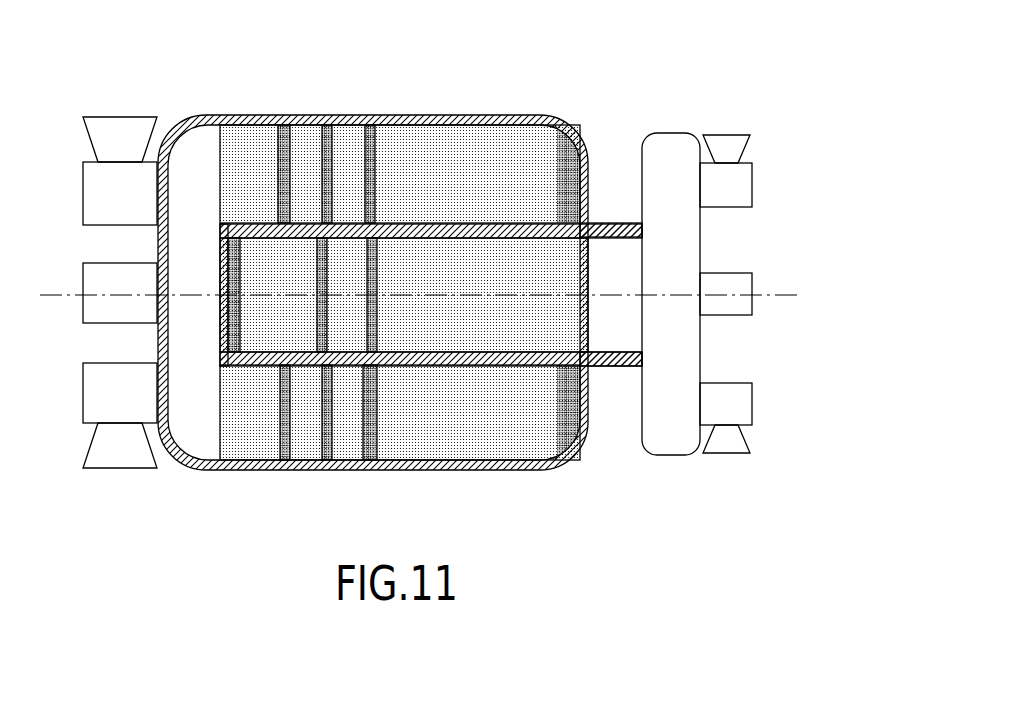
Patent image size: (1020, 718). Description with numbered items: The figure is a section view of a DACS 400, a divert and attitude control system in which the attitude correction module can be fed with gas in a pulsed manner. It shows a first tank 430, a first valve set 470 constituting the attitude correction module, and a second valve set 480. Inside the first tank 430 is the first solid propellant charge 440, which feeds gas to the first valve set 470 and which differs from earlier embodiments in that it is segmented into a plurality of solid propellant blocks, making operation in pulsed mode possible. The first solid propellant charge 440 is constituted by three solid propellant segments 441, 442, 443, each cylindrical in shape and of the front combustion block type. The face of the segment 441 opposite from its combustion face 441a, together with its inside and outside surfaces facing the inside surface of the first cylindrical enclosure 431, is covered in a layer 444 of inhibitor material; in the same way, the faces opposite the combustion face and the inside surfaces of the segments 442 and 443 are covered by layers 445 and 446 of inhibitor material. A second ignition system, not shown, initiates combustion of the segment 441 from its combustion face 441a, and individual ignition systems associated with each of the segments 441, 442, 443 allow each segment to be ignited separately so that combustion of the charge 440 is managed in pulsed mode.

The DACS 400 is at (630, 96).
The first tank 430 is at (262, 338).
The first cylindrical enclosure 431 is at (478, 228).
The first solid propellant charge 440 is at (432, 387).
The solid propellant segment 441 is at (425, 322).
The combustion face 441a is at (587, 312).
The solid propellant segment 442 is at (343, 323).
The solid propellant segment 443 is at (298, 328).
The layer of inhibitor material 444 is at (420, 217).
The layer of inhibitor material 445 is at (320, 217).
The layer of inhibitor material 446 is at (238, 217).
The first valve set 470 is at (703, 478).
The second valve set 480 is at (96, 482).